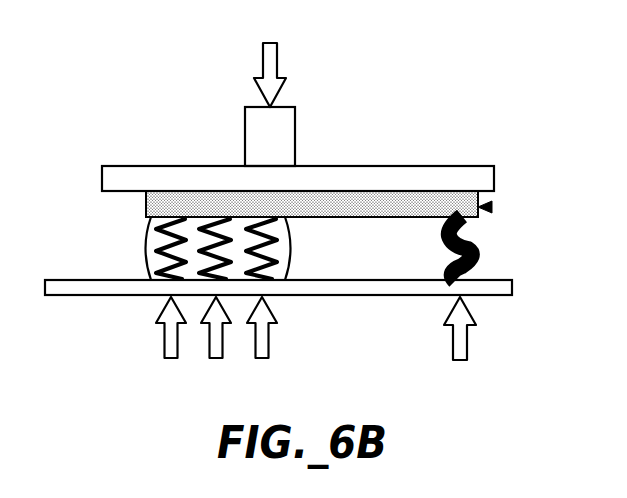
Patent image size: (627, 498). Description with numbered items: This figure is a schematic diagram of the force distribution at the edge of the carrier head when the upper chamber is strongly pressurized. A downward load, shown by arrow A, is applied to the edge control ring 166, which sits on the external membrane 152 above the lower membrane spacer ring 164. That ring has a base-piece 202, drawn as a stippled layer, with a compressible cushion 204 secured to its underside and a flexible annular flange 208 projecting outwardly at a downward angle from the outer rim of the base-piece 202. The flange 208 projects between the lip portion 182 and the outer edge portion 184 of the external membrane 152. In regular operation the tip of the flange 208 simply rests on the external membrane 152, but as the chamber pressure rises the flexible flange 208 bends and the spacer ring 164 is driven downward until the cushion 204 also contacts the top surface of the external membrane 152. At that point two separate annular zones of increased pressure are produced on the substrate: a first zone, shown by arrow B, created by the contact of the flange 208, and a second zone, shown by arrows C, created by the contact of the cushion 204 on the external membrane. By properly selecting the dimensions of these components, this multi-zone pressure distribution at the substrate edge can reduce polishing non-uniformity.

The external membrane 152 is at (317, 233).
The lower membrane spacer ring 164 is at (491, 207).
The edge control ring 166 is at (295, 145).
The lip portion 182 is at (330, 296).
The outer edge portion 184 is at (405, 166).
The base-piece 202 is at (146, 200).
The compressible cushion 204 is at (146, 247).
The flexible annular flange 208 is at (444, 254).
The arrow A is at (270, 62).
The arrow B is at (460, 345).
The arrow C is at (270, 367).